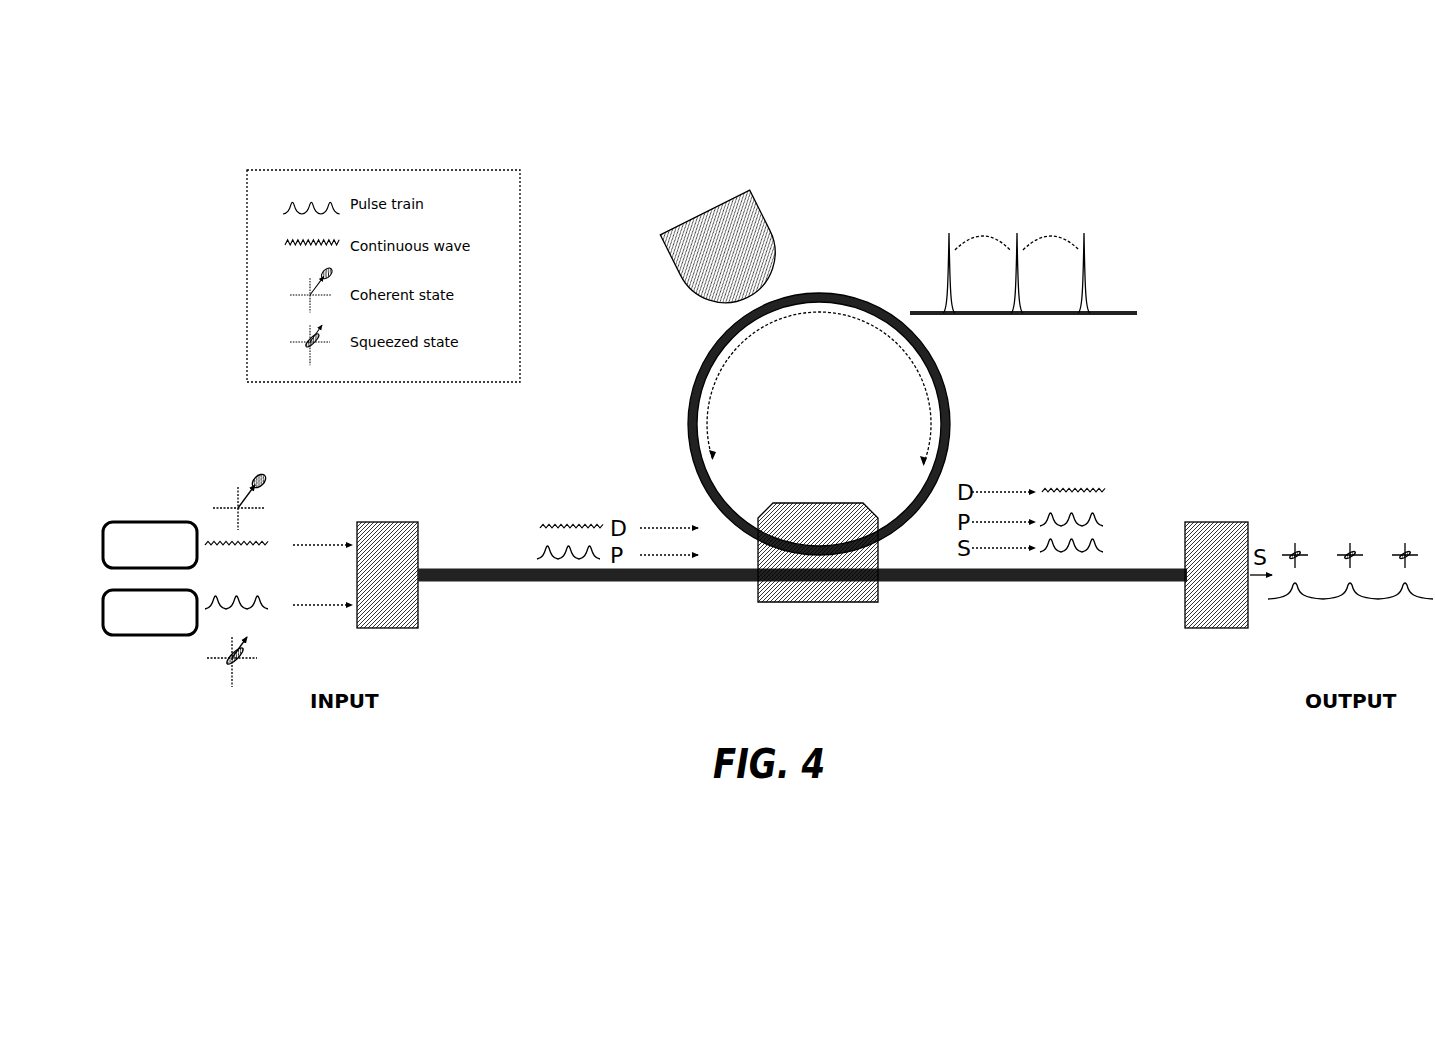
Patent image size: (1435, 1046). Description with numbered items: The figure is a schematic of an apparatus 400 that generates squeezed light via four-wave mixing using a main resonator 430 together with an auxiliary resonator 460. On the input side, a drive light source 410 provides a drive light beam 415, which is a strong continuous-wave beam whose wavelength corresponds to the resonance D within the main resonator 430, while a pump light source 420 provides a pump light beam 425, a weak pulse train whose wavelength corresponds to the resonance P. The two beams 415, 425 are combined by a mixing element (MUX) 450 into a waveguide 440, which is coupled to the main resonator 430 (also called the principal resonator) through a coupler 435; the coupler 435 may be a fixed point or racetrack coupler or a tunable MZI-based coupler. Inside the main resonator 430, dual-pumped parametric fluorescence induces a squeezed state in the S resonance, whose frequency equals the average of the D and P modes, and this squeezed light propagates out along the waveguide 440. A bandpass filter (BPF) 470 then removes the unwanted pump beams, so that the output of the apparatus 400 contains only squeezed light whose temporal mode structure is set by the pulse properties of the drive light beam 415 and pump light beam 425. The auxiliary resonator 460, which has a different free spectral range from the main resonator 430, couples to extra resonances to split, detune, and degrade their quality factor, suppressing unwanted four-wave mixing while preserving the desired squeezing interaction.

The apparatus 400 is at (1212, 247).
The drive light source 410 is at (128, 559).
The drive light beam 415 is at (267, 501).
The pump light source 420 is at (128, 626).
The pump light beam 425 is at (264, 657).
The main resonator 430 is at (689, 440).
The coupler 435 is at (835, 602).
The waveguide 440 is at (583, 583).
The mixing element (MUX) 450 is at (388, 522).
The auxiliary resonator 460 is at (704, 212).
The bandpass filter (BPF) 470 is at (1222, 522).